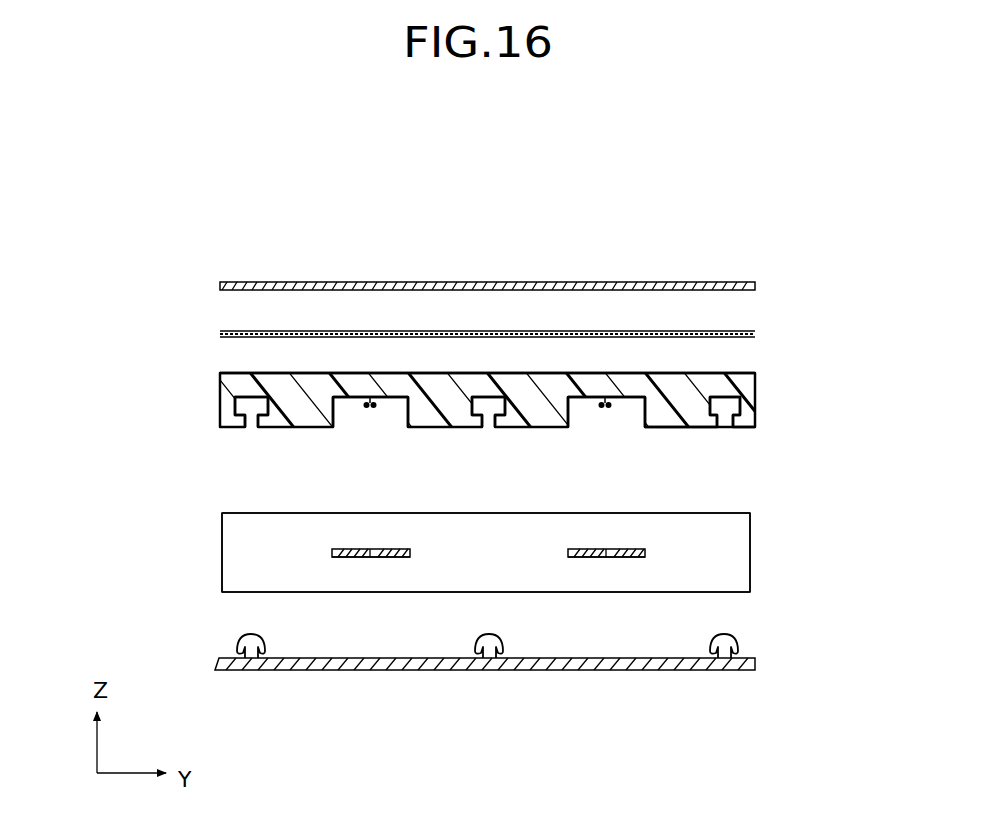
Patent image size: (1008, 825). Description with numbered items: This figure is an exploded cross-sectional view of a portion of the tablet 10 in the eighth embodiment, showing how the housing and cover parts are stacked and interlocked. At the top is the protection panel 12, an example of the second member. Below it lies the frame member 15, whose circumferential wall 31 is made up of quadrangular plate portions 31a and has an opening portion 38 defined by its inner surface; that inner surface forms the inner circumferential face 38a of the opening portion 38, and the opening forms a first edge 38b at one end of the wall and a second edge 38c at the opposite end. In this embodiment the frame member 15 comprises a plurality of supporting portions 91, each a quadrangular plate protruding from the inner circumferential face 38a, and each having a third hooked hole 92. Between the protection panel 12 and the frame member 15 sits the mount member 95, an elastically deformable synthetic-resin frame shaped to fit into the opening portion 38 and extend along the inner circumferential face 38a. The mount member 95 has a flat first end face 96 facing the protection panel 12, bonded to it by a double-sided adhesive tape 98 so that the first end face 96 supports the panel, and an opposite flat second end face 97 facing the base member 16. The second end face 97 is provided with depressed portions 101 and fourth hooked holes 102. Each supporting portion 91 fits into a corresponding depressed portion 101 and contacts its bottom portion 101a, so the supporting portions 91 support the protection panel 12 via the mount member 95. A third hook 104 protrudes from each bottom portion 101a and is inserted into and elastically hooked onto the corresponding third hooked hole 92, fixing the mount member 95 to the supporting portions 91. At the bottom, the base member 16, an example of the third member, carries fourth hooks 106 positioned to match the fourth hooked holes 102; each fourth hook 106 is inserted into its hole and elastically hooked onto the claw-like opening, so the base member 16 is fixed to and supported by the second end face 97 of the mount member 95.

The tablet 10 is at (280, 228).
The protection panel 12 is at (467, 282).
The frame member 15 is at (222, 591).
The base member 16 is at (233, 663).
The circumferential wall 31 is at (272, 562).
The plate portion 31a is at (238, 535).
The opening portion 38 is at (532, 528).
The inner circumferential face 38a is at (697, 550).
The first edge 38b is at (428, 513).
The second edge 38c is at (418, 592).
The supporting portion 91 is at (353, 549).
The third hooked hole 92 is at (370, 558).
The mount member 95 is at (230, 390).
The first end face 96 is at (721, 373).
The second end face 97 is at (707, 428).
The double-sided adhesive tape 98 is at (682, 331).
The depressed portion 101 is at (408, 424).
The bottom portion 101a is at (357, 403).
The fourth hooked hole 102 is at (251, 428).
The third hook 104 is at (380, 410).
The fourth hook 106 is at (260, 652).